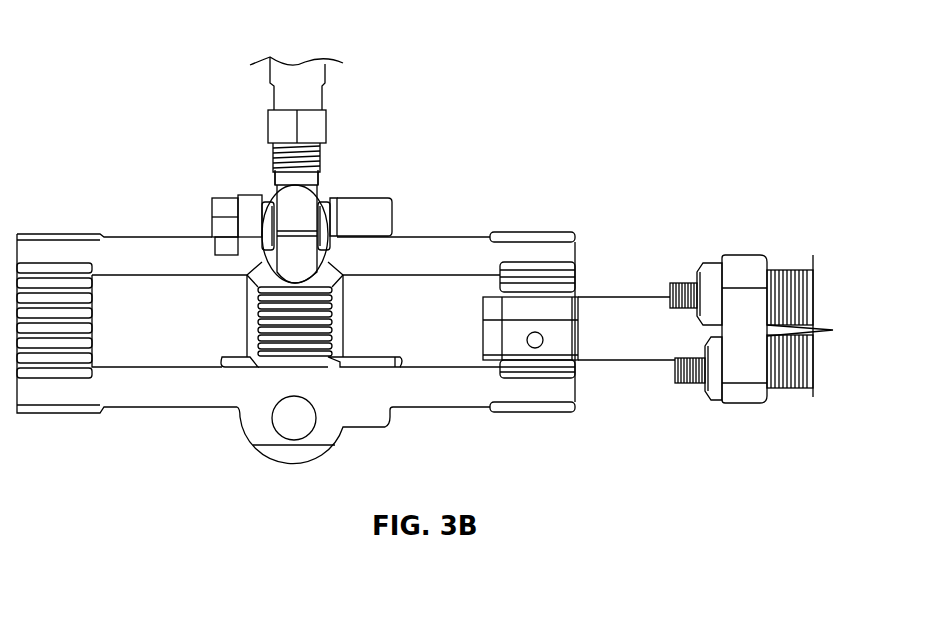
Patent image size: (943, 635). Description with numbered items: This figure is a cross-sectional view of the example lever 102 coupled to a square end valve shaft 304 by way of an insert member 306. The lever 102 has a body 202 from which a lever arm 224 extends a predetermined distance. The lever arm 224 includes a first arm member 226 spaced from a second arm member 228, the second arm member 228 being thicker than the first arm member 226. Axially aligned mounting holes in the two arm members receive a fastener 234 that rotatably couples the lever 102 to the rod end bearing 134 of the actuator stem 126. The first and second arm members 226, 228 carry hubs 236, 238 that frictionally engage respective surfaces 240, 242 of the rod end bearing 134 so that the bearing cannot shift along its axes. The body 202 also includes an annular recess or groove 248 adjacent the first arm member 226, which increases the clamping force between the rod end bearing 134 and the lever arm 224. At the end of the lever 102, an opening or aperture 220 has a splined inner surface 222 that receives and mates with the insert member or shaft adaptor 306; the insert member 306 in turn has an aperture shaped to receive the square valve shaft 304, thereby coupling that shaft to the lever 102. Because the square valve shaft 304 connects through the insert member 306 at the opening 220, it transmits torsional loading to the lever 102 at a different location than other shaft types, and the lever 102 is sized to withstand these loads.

The lever 102 is at (118, 92).
The actuator stem 126 is at (325, 96).
The rod end bearing 134 is at (333, 283).
The body 202 is at (430, 236).
The opening or aperture 220 is at (575, 367).
The inner surface 222 is at (498, 365).
The lever arm 224 is at (364, 176).
The first arm member 226 is at (243, 195).
The second arm member 228 is at (377, 198).
The fastener 234 is at (212, 205).
The hub 236 is at (262, 197).
The hub 238 is at (335, 197).
The surface 240 is at (250, 280).
The surface 242 is at (293, 263).
The annular recess or groove 248 is at (213, 242).
The square end valve shaft 304 is at (630, 360).
The insert member 306 is at (575, 288).